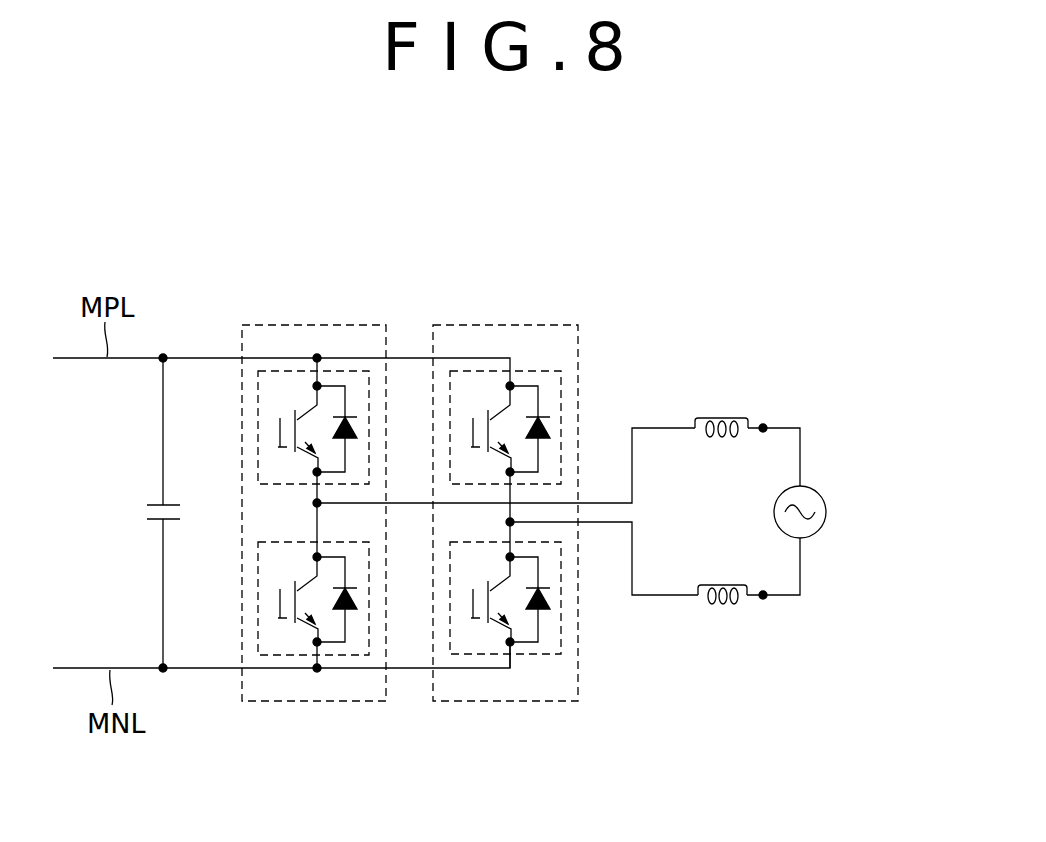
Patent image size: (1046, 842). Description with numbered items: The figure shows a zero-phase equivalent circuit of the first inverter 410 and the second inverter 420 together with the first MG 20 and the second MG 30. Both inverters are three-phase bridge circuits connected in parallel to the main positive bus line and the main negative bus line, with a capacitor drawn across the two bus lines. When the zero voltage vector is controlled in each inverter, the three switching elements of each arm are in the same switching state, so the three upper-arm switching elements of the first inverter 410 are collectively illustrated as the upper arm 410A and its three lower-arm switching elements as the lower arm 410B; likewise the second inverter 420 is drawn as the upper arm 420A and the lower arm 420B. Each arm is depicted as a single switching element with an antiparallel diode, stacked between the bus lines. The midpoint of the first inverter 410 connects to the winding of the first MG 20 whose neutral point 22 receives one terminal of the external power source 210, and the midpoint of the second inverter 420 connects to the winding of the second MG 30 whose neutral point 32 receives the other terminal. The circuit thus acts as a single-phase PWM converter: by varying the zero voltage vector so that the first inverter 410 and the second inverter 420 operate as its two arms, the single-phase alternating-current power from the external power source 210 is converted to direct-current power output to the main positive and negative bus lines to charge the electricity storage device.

The first inverter 410 is at (278, 323).
The upper arm 410A is at (347, 371).
The lower arm 410B is at (283, 658).
The second inverter 420 is at (470, 323).
The upper arm 420A is at (537, 371).
The lower arm 420B is at (538, 658).
The first MG 20 is at (736, 401).
The neutral point 22 is at (763, 428).
The second MG 30 is at (739, 622).
The neutral point 32 is at (763, 595).
The external power source 210 is at (826, 512).